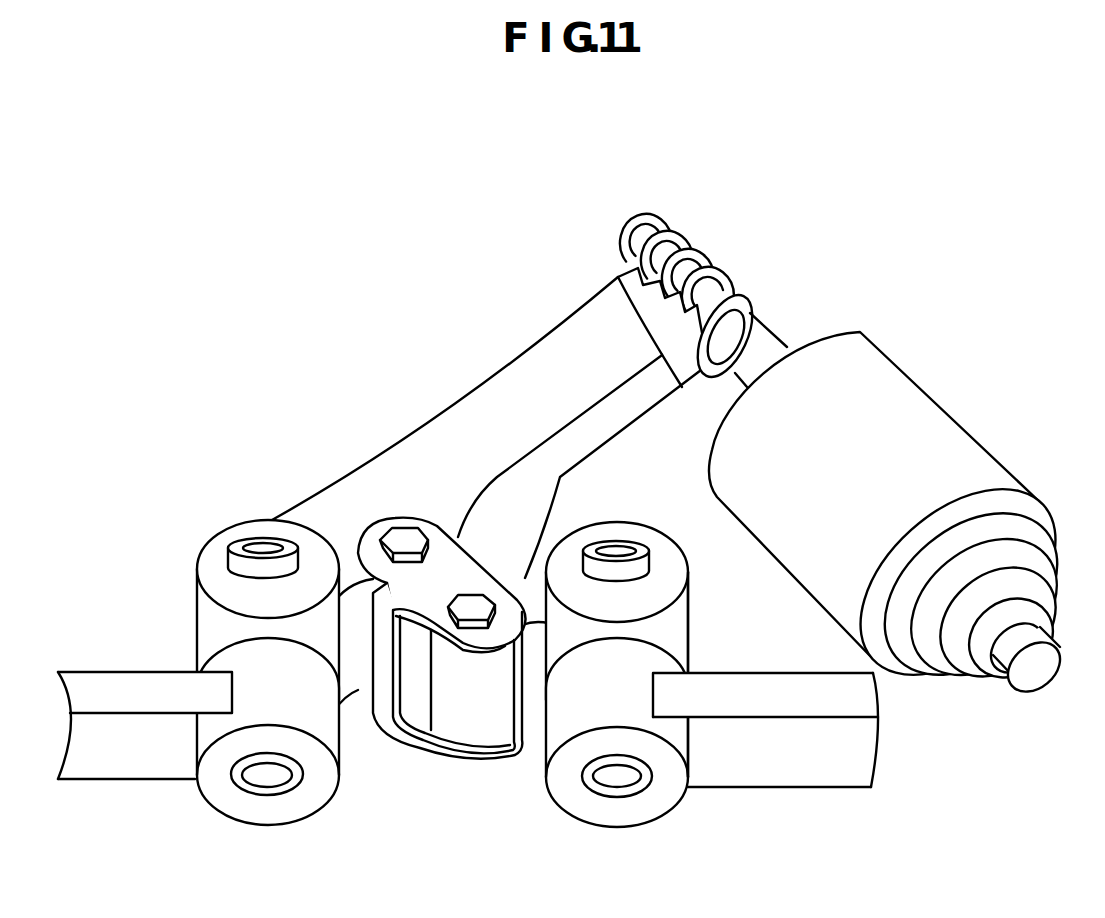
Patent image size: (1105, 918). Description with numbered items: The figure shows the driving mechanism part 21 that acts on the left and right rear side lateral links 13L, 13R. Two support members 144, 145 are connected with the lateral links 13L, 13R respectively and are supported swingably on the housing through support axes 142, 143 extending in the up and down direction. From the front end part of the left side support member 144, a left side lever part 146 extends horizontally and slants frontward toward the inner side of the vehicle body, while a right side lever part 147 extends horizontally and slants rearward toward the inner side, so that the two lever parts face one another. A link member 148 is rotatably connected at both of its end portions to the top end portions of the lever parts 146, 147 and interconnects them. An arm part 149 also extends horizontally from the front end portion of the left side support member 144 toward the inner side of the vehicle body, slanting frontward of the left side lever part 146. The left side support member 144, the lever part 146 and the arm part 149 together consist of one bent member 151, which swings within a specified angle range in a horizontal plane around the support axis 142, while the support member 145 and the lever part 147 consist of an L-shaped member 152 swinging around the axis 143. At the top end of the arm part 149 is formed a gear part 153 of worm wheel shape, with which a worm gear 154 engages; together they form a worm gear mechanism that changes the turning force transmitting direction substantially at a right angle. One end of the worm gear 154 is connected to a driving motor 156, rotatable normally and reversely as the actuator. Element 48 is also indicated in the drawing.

The driving mechanism part 21 is at (378, 360).
The arm part 149 is at (393, 446).
The bent member 151 is at (309, 488).
The right side lever part 147 is at (528, 577).
The gear part 153 is at (630, 268).
The worm gear 154 is at (730, 280).
The driving motor 156 is at (990, 445).
The left side lever part 146 is at (352, 673).
The link member 148 is at (437, 555).
The support axis 142 is at (248, 548).
The support axis 143 is at (617, 548).
The L-shaped member 152 is at (684, 596).
The left side support member 144 is at (323, 728).
The right side support member 145 is at (553, 733).
The roller support 48 is at (688, 635).
The left rear side lateral link 13L is at (110, 782).
The right rear side lateral link 13R is at (770, 789).